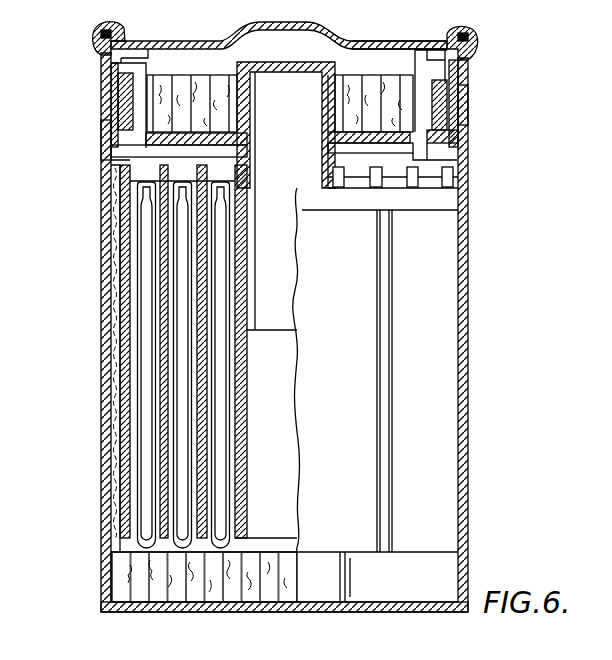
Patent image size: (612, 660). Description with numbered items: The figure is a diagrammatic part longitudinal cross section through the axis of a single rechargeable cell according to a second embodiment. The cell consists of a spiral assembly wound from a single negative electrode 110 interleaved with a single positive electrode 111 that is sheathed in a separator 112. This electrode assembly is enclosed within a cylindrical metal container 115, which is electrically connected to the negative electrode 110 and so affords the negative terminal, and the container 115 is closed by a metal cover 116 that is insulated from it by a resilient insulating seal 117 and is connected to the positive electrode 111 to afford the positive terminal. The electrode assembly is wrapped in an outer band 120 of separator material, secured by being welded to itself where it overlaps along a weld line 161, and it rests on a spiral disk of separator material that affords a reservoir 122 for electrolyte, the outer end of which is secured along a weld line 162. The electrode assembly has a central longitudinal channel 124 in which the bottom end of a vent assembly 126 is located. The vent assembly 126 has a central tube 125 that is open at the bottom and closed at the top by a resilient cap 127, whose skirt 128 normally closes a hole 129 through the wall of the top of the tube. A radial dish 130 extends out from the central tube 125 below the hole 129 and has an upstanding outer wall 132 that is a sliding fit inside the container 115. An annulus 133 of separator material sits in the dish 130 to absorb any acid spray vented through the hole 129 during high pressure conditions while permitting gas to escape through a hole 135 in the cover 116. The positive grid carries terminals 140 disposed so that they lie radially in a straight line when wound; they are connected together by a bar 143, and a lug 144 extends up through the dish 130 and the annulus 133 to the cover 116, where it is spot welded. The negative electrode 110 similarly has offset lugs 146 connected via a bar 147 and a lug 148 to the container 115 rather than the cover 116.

The negative electrode 110 is at (118, 273).
The positive electrode 111 is at (143, 428).
The separator 112 is at (126, 318).
The cylindrical metal container 115 is at (107, 550).
The metal cover 116 is at (373, 43).
The resilient insulating seal 117 is at (471, 50).
The outer band 120 is at (110, 489).
The reservoir 122 is at (125, 592).
The central longitudinal channel 124 is at (297, 386).
The central tube 125 is at (255, 273).
The vent assembly 126 is at (100, 142).
The resilient cap 127 is at (280, 62).
The skirt 128 is at (338, 98).
The hole 129 is at (263, 93).
The radial dish 130 is at (437, 150).
The upstanding outer wall 132 is at (464, 98).
The annulus 133 is at (111, 86).
The hole 135 is at (188, 42).
The terminals 140 is at (457, 182).
The bar 143 is at (455, 172).
The lug 144 is at (437, 128).
The lugs 146 is at (118, 188).
The bar 147 is at (117, 160).
The lug 148 is at (112, 118).
The weld line 161 is at (392, 366).
The weld line 162 is at (352, 583).